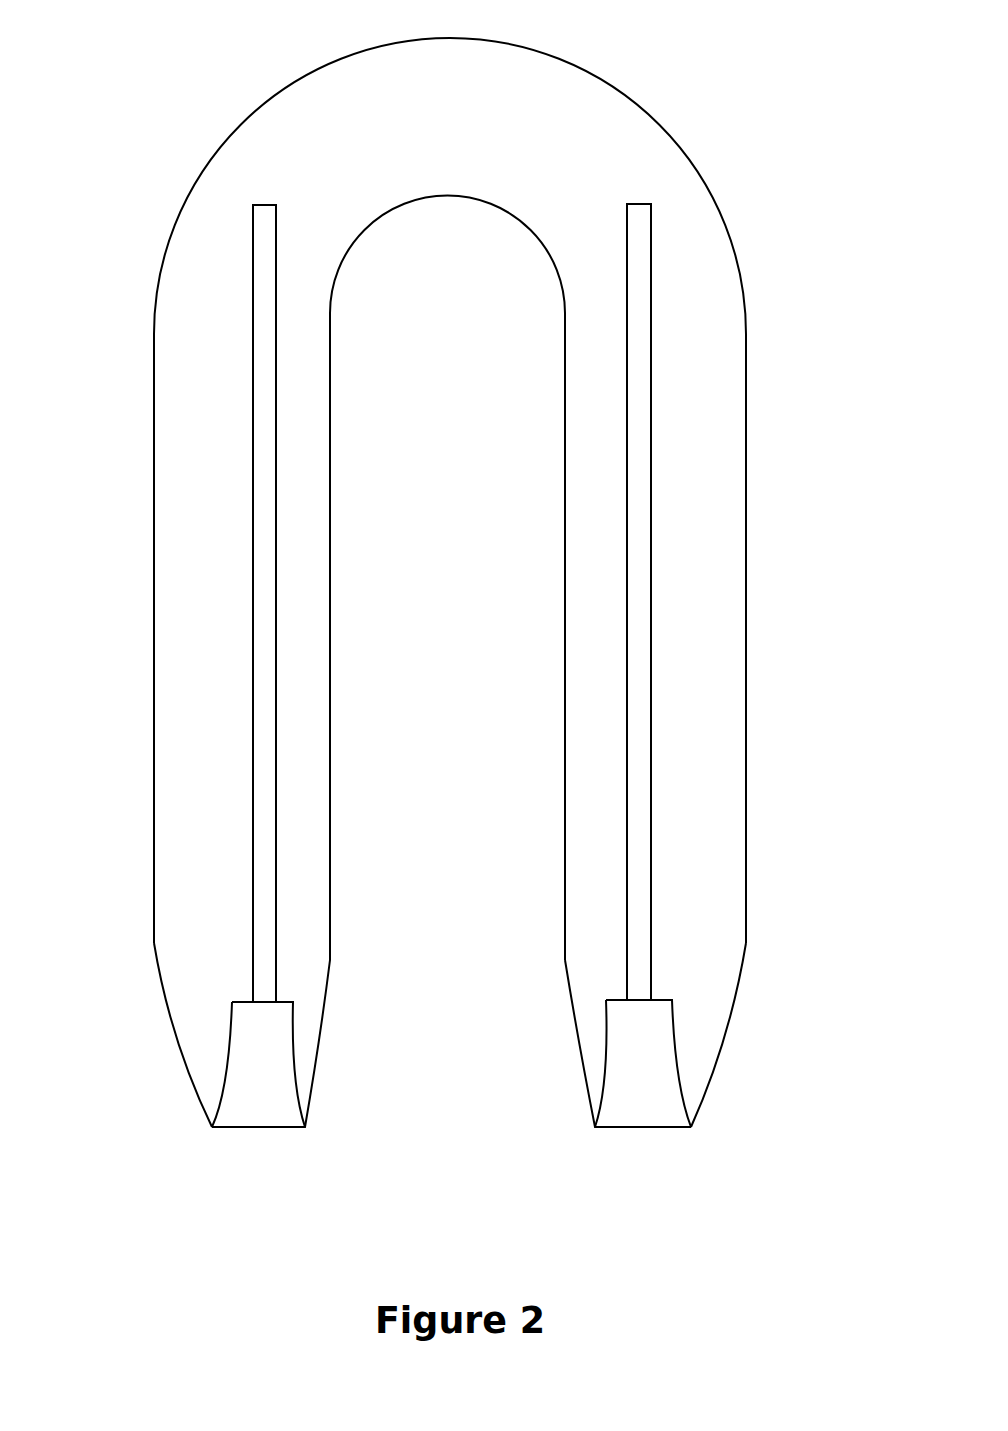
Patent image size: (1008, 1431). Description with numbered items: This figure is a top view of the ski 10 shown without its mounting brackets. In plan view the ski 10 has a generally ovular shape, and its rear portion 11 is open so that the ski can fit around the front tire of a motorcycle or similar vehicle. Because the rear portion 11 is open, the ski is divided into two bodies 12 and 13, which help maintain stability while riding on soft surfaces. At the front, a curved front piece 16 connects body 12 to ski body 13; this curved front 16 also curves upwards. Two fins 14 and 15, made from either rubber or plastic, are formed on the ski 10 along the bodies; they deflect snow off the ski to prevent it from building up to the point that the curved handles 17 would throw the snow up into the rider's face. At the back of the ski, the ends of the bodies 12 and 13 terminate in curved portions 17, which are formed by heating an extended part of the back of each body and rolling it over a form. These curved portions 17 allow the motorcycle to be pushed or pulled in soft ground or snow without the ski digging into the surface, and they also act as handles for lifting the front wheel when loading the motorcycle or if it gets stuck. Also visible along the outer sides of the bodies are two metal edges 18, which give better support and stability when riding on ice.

The ski 10 is at (783, 605).
The rear portion 11 is at (555, 1062).
The body 12 is at (155, 445).
The body 13 is at (763, 407).
The fin 14 is at (252, 330).
The fin 15 is at (657, 350).
The curved front piece 16 is at (295, 80).
The curved portion 17 is at (222, 1043).
The metal edge 18 is at (150, 692).